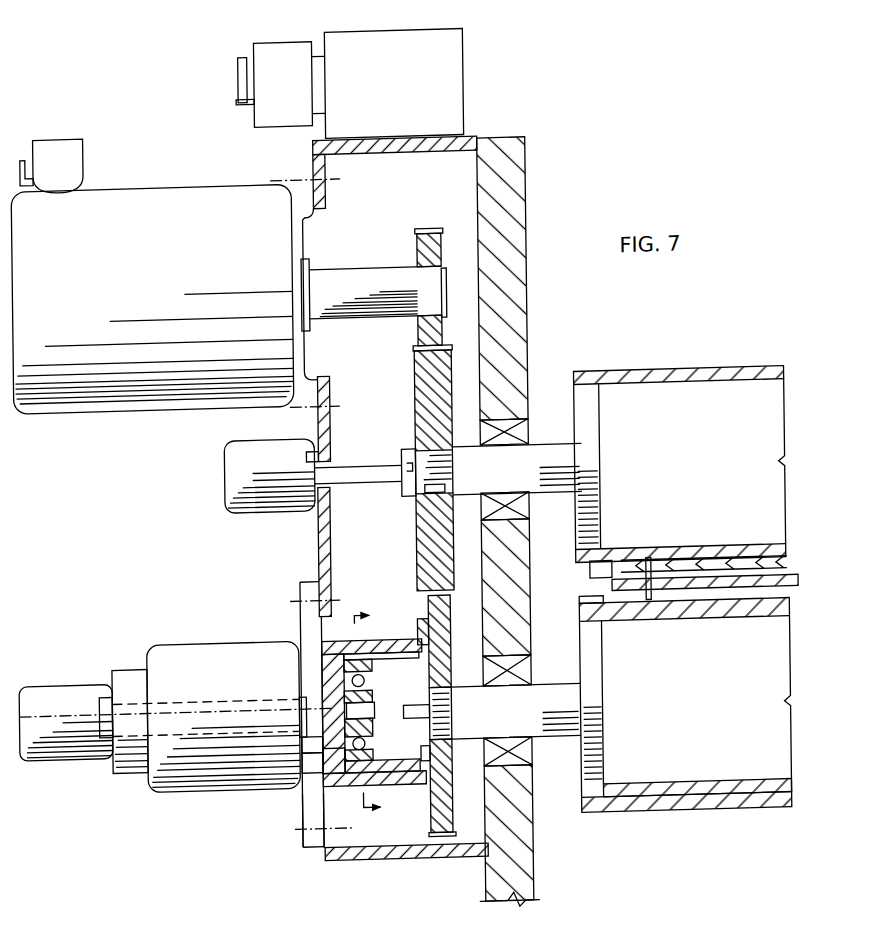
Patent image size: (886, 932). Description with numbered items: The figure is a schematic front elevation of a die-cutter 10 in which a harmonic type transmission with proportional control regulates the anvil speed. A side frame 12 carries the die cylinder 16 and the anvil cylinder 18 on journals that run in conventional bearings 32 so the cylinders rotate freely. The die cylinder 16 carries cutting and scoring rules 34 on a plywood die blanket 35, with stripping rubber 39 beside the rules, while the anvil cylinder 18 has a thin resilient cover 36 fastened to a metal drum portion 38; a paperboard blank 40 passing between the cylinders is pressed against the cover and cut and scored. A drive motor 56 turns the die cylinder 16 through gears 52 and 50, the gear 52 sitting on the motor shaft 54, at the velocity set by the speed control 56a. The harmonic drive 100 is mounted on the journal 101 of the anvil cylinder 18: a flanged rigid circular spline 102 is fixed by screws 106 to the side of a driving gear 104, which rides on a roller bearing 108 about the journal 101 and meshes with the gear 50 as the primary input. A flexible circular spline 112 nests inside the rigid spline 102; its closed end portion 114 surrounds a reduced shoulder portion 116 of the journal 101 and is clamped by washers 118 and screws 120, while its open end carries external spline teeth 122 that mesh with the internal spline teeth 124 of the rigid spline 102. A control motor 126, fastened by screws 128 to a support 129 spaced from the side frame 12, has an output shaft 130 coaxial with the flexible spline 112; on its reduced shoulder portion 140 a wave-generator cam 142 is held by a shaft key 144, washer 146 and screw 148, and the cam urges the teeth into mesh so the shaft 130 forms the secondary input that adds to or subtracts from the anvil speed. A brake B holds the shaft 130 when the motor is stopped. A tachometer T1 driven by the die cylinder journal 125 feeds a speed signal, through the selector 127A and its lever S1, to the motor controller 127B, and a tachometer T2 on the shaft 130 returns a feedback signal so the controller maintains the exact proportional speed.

The die-cutter 10 is at (724, 319).
The side frame 12 is at (501, 139).
The die cylinder 16 is at (786, 420).
The anvil cylinder 18 is at (789, 665).
The bearings 32 is at (518, 421).
The cutting and scoring rules 34 is at (658, 565).
The die blanket 35 is at (589, 575).
The resilient cover 36 is at (582, 603).
The metal drum portion 38 is at (780, 789).
The stripping rubber 39 is at (640, 565).
The paperboard blank 40 is at (797, 586).
The die cylinder gear 50 is at (416, 392).
The gear 52 is at (430, 228).
The motor shaft 54 is at (365, 266).
The drive motor 56 is at (150, 180).
The speed control 56a is at (86, 129).
The harmonic drive 100 is at (368, 566).
The journal 101 is at (576, 683).
The rigid circular spline 102 is at (345, 638).
The driving gear 104 is at (449, 812).
The screws 106 is at (449, 624).
The roller bearing 108 is at (449, 770).
The flexible circular spline 112 is at (398, 651).
The end portion 114 is at (449, 660).
The reduced shoulder portion 116 is at (449, 720).
The washers 118 is at (394, 786).
The screws 120 is at (449, 700).
The external spline teeth 122 is at (326, 768).
The internal spline teeth 124 is at (321, 748).
The journal 125 is at (553, 448).
The control motor 126 is at (231, 637).
The selector 127A is at (287, 38).
The motor controller 127B is at (470, 35).
The screws 128 is at (318, 836).
The support 129 is at (398, 857).
The output shaft 130 is at (328, 737).
The reduced shoulder portion 140 is at (380, 680).
The wave-generator cam 142 is at (328, 700).
The shaft key 144 is at (338, 757).
The washer 146 is at (378, 702).
The screw 148 is at (380, 739).
The brake B is at (140, 661).
The selector lever S1 is at (243, 64).
The tachometer T1 is at (225, 470).
The tachometer T2 is at (66, 675).